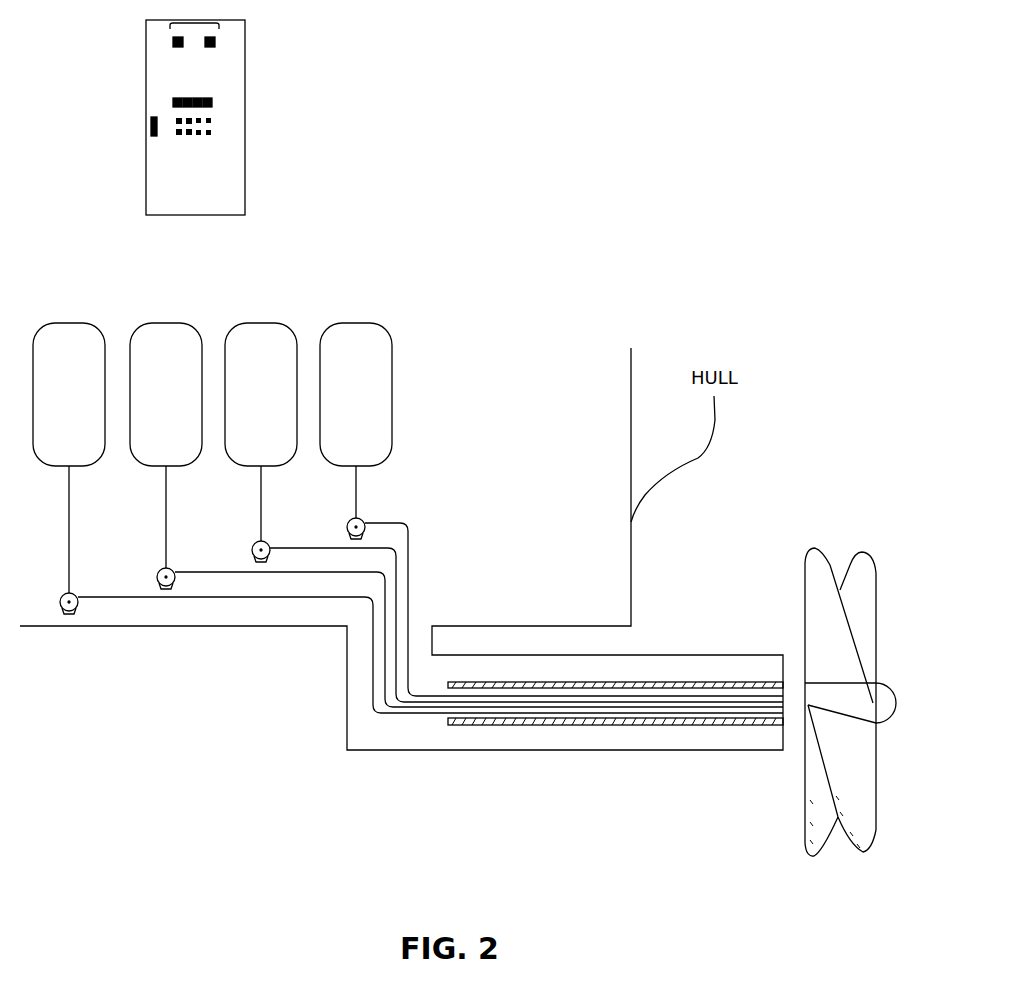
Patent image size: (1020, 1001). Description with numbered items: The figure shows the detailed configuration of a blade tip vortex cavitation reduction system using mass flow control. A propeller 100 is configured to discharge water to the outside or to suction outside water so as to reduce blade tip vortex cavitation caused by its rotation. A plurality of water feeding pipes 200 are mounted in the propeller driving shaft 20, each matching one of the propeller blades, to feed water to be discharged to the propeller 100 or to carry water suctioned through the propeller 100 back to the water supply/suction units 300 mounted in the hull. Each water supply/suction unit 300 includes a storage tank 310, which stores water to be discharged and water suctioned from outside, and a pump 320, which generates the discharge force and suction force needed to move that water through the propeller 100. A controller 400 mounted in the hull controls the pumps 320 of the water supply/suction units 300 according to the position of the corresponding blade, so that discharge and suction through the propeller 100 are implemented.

The controller 400 is at (245, 117).
The water supply/suction unit 300 is at (568, 284).
The storage tank 310 is at (392, 394).
The pump 320 is at (362, 520).
The water feeding pipe 200 is at (200, 572).
The propeller 100 is at (817, 541).
The propeller driving shaft 20 is at (670, 725).